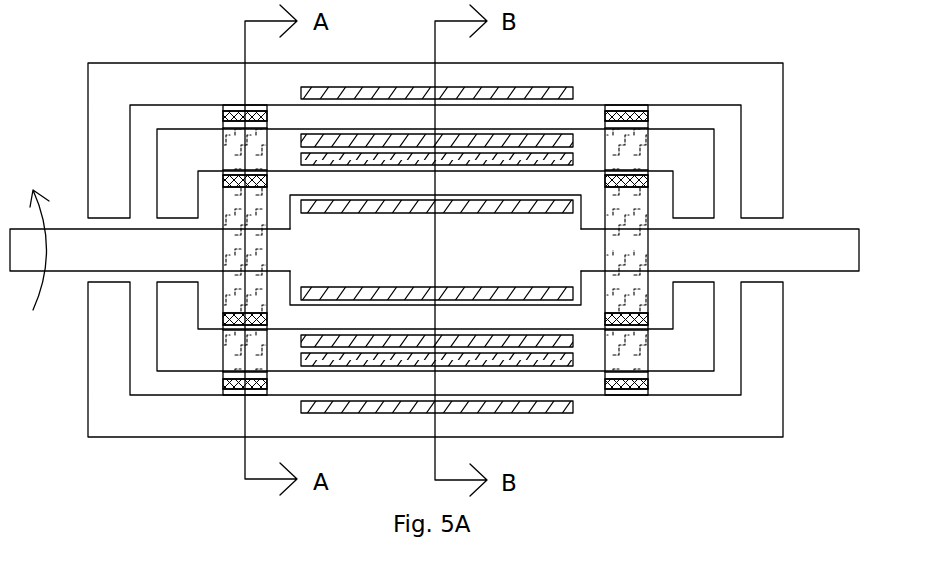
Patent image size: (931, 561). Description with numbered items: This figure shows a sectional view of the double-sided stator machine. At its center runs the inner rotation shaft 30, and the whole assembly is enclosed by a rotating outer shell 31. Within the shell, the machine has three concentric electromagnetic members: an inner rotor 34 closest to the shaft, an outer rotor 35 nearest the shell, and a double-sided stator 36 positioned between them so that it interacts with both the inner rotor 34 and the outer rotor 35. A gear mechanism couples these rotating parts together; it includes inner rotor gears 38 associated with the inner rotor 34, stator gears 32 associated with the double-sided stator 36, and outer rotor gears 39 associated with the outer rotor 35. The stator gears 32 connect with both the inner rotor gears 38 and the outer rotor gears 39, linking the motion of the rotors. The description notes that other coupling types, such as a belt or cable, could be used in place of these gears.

The inner rotation shaft 30 is at (798, 245).
The rotating outer shell 31 is at (662, 80).
The stator gears 32 is at (632, 343).
The inner rotor 34 is at (527, 216).
The outer rotor 35 is at (519, 92).
The double-sided stator 36 is at (570, 358).
The inner rotor gears 38 is at (635, 283).
The outer rotor gears 39 is at (632, 392).